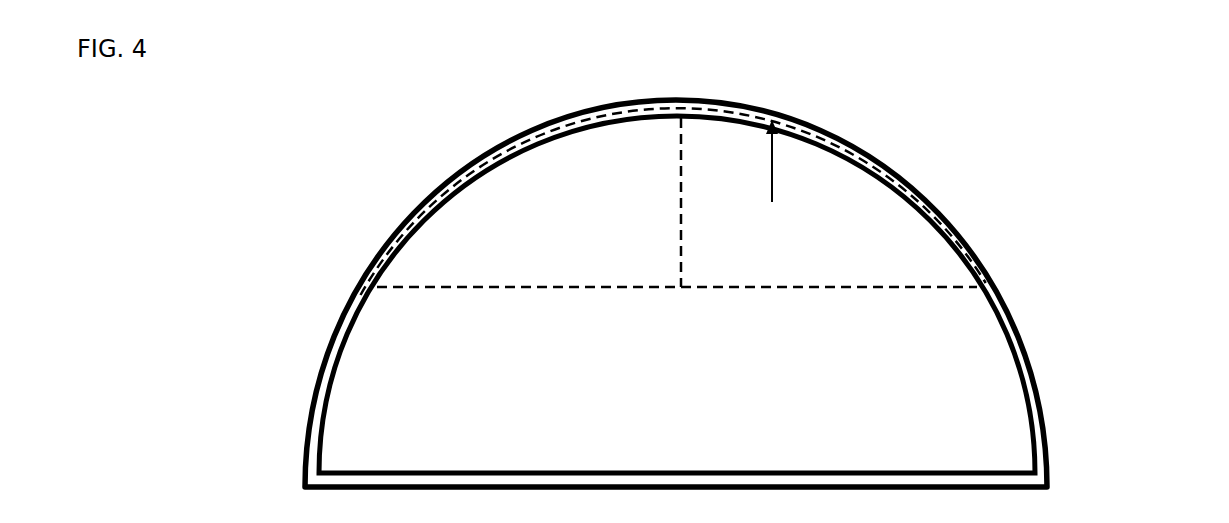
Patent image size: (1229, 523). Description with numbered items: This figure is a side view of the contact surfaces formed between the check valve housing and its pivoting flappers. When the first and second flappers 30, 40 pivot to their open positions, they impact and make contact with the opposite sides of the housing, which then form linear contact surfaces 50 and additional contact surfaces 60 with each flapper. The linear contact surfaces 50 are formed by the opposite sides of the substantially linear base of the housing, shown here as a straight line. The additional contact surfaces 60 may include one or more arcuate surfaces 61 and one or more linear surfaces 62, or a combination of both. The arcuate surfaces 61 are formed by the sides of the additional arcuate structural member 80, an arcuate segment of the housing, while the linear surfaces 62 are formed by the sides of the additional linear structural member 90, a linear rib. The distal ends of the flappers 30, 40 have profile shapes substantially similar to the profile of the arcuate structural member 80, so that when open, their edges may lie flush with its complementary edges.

The first flapper 30 is at (754, 293).
The second flapper 40 is at (1040, 350).
The additional structural member 80 is at (655, 196).
The arcuate surface 61 is at (512, 140).
The additional structural member 90 is at (600, 202).
The linear surface 62 is at (681, 187).
The additional contact surfaces 60 is at (692, 228).
The linear contact surfaces 50 is at (838, 296).